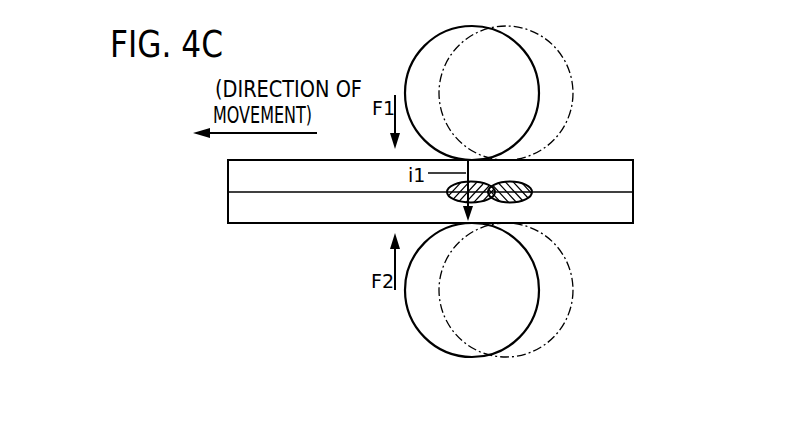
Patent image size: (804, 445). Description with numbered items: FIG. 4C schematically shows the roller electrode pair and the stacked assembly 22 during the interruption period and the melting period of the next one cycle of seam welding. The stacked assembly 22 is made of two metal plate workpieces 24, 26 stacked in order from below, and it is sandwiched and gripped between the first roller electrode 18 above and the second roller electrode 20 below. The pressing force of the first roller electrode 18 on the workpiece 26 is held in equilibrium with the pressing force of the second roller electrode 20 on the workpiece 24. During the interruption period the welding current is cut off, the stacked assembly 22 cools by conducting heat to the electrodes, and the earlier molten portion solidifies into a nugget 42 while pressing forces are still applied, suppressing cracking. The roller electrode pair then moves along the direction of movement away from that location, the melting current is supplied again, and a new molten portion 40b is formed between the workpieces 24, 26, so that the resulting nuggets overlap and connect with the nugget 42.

The first roller electrode 18 is at (432, 48).
The second roller electrode 20 is at (432, 335).
The stacked assembly 22 is at (481, 194).
The workpiece 24 is at (459, 216).
The workpiece 26 is at (623, 176).
The new molten portion 40b is at (447, 195).
The nugget 42 is at (533, 185).